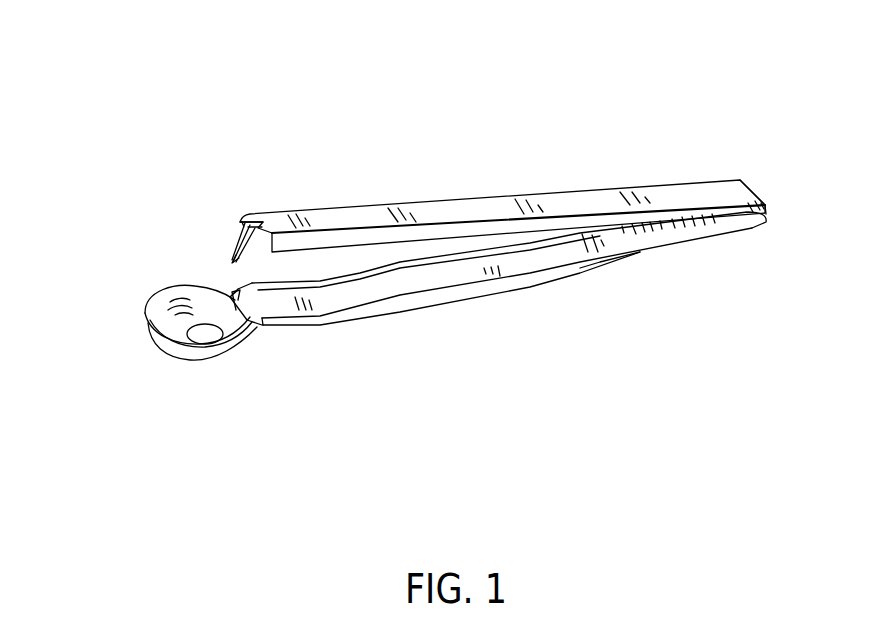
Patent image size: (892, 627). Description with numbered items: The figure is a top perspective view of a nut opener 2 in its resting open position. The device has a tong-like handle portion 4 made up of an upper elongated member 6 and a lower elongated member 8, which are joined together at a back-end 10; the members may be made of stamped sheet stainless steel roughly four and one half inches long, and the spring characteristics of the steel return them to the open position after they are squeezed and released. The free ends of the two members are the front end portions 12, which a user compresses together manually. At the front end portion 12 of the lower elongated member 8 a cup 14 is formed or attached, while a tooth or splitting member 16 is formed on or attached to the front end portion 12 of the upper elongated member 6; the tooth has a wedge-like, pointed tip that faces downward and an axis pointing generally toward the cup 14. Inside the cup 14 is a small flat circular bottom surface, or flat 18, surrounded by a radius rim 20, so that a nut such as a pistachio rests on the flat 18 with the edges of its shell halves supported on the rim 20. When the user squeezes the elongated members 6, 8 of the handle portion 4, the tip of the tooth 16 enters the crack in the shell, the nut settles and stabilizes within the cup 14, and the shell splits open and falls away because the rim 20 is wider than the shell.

The nut opener 2 is at (720, 130).
The tong-like handle portion 4 is at (657, 197).
The upper elongated member 6 is at (497, 195).
The lower elongated member 8 is at (527, 290).
The back-end 10 is at (753, 197).
The front end portions 12 is at (268, 215).
The cup 14 is at (175, 352).
The tooth or splitting member 16 is at (233, 240).
The flat 18 is at (207, 320).
The radius rim 20 is at (147, 318).